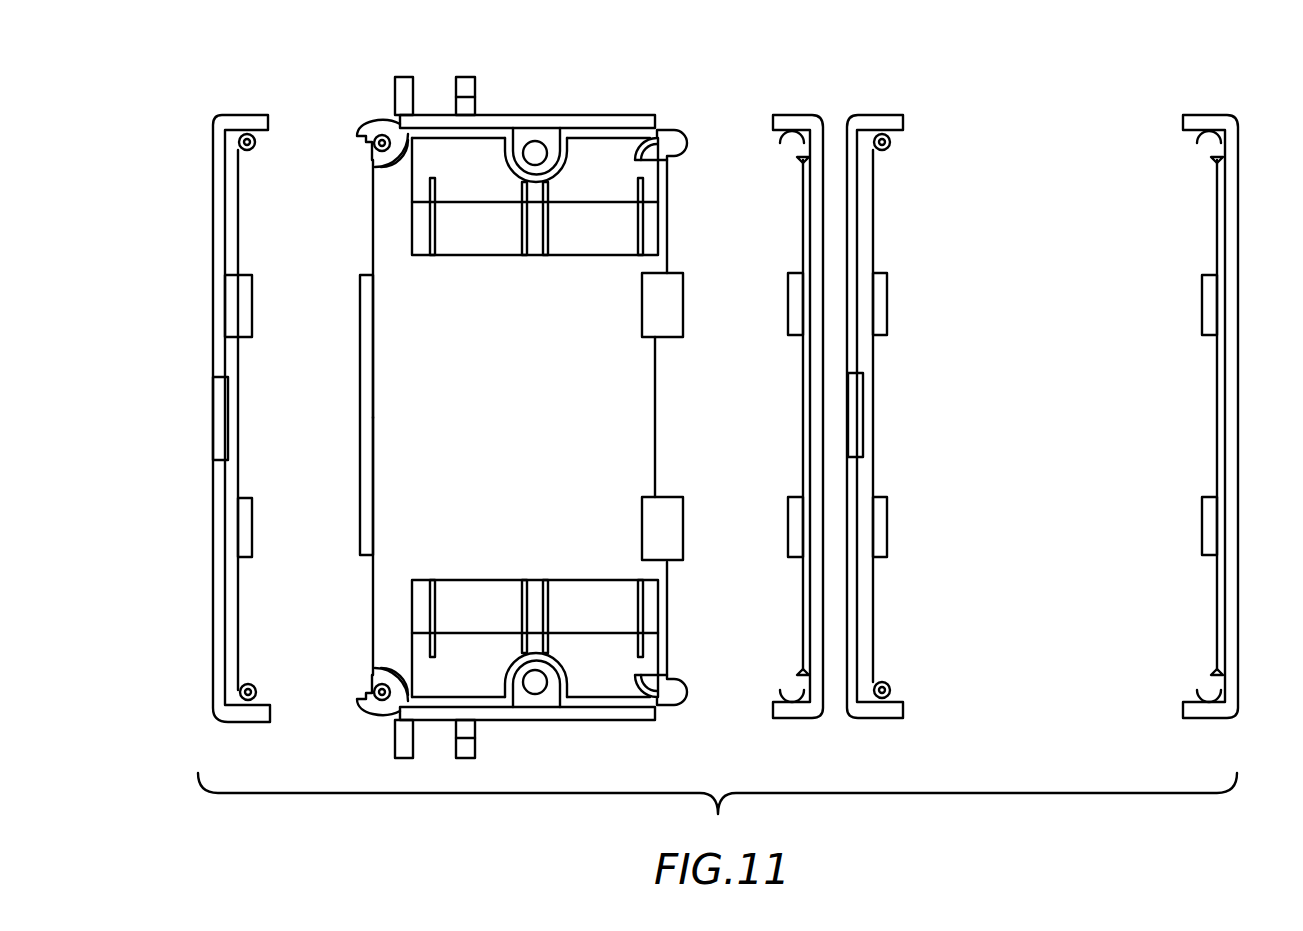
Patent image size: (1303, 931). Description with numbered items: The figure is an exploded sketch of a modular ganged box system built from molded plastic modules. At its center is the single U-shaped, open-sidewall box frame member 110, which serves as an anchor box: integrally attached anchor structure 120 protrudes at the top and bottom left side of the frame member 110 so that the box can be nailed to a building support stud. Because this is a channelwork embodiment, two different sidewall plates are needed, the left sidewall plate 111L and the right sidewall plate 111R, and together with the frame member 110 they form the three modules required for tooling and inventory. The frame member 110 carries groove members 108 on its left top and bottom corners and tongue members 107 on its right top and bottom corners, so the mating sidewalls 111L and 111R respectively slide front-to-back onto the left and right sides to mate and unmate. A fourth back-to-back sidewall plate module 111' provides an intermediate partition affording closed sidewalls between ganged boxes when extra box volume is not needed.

The box frame member 110 is at (497, 417).
The anchor structure 120 is at (475, 63).
The groove member 108 is at (373, 145).
The tongue member 107 is at (250, 157).
The left sidewall plate 111L is at (267, 388).
The right sidewall plate 111R is at (1223, 115).
The back-to-back sidewall plate module 111' is at (838, 396).